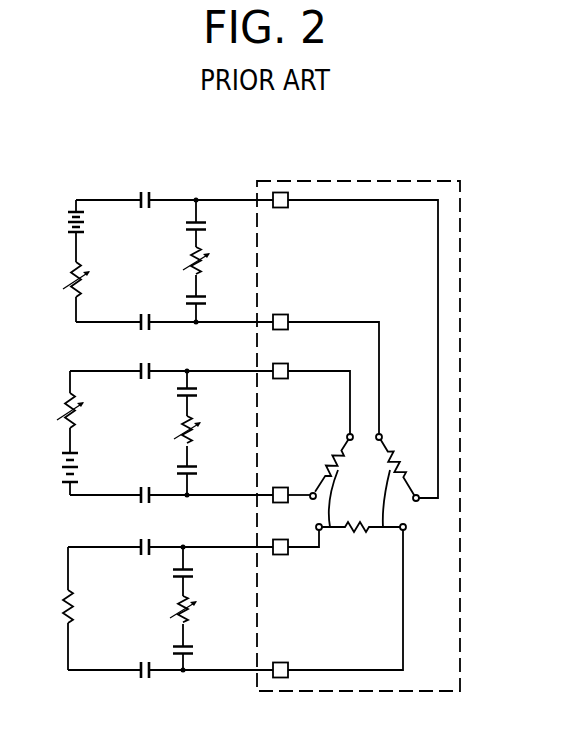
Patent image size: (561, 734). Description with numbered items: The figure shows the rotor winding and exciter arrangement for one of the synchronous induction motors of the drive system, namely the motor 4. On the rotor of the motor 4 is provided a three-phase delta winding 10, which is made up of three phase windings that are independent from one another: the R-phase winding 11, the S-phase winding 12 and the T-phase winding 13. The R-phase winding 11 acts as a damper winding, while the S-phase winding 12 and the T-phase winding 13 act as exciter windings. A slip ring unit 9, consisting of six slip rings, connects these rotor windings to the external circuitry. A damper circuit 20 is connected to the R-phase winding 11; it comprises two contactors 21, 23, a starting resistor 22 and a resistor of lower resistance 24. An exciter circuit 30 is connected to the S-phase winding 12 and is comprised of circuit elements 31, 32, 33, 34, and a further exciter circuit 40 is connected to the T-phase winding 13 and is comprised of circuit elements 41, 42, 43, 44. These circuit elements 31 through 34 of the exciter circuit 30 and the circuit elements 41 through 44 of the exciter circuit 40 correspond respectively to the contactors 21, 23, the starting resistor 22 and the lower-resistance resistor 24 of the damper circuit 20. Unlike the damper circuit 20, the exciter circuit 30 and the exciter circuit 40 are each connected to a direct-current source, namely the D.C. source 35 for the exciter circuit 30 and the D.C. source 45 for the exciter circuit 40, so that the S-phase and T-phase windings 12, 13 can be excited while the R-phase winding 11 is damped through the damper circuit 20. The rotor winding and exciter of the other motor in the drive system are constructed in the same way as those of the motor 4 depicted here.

The motor 4 is at (426, 181).
The slip ring unit 9 is at (280, 208).
The three-phase delta winding 10 is at (364, 527).
The R-phase winding 11 is at (358, 531).
The S-phase winding 12 is at (330, 527).
The T-phase winding 13 is at (383, 526).
The damper circuit 20 is at (102, 547).
The contactor 21 is at (195, 572).
The starting resistor 22 is at (197, 611).
The contactor 23 is at (145, 556).
The resistor of lower resistance 24 is at (63, 609).
The exciter circuit 30 is at (97, 371).
The circuit element 31 is at (198, 395).
The circuit element 32 is at (198, 431).
The circuit element 33 is at (145, 380).
The circuit element 34 is at (66, 407).
The D.C. source 35 is at (60, 470).
The exciter circuit 40 is at (98, 200).
The circuit element 41 is at (207, 227).
The circuit element 42 is at (190, 260).
The circuit element 43 is at (145, 192).
The circuit element 44 is at (70, 284).
The D.C. source 45 is at (68, 228).